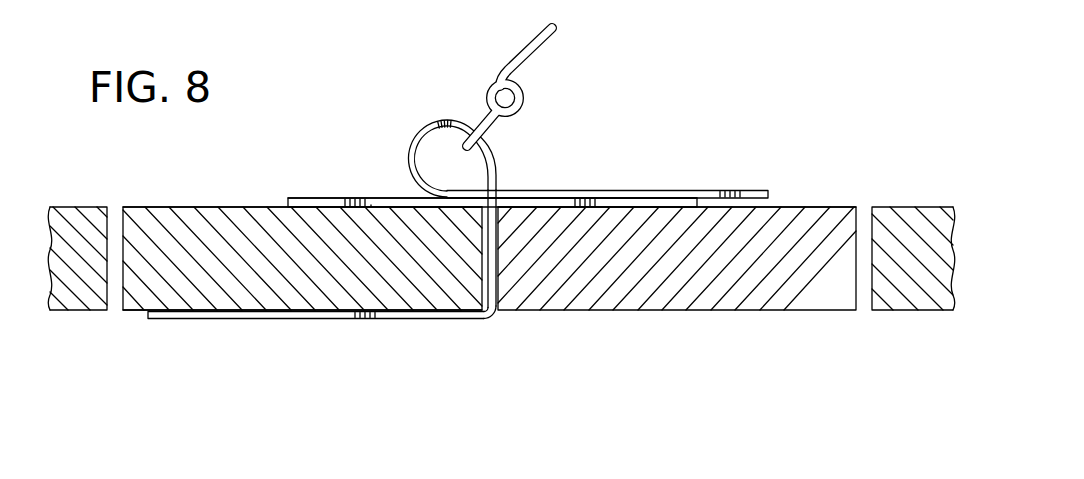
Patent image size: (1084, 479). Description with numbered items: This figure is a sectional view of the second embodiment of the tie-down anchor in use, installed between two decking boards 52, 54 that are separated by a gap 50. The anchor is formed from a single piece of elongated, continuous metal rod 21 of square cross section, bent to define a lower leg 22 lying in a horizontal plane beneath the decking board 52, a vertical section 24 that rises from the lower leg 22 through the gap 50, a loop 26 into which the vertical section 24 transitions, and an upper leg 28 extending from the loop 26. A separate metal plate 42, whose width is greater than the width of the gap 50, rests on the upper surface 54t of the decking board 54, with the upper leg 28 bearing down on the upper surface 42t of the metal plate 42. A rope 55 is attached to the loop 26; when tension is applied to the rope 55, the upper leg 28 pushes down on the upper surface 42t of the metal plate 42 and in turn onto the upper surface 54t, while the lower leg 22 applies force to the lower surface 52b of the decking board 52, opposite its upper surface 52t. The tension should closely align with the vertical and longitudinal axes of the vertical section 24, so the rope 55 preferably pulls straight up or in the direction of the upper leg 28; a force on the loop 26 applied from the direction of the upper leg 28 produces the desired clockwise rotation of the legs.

The metal rod 21 is at (458, 208).
The lower leg 22 is at (282, 318).
The vertical section 24 is at (500, 260).
The loop 26 is at (440, 121).
The upper leg 28 is at (565, 190).
The metal plate 42 is at (306, 198).
The upper surface of the metal plate 42t is at (646, 190).
The gap 50 is at (485, 267).
The decking board 52 is at (160, 207).
The top surface of first panel 52t is at (223, 207).
The lower surface of decking board 52b is at (174, 318).
The decking board 54 is at (790, 207).
The upper surface of the decking board 54t is at (842, 207).
The rope 55 is at (517, 58).